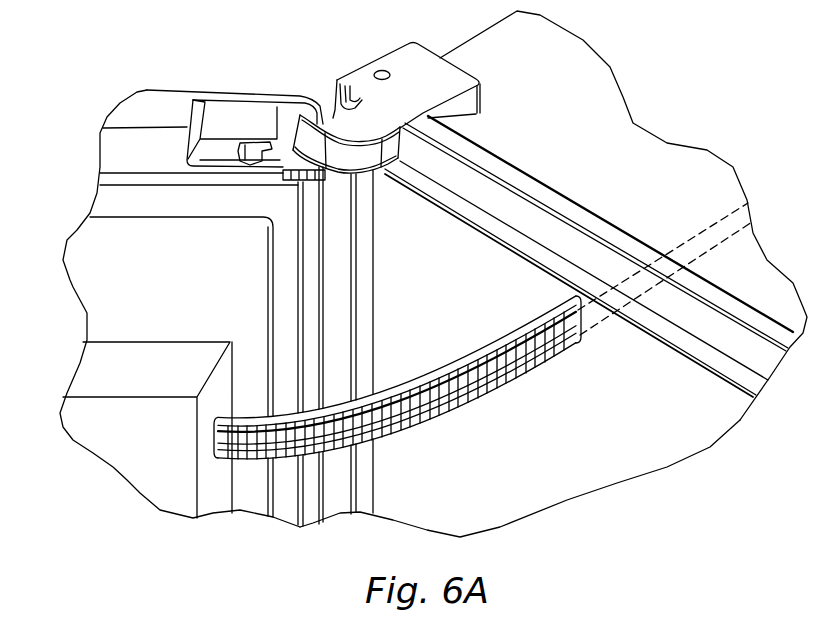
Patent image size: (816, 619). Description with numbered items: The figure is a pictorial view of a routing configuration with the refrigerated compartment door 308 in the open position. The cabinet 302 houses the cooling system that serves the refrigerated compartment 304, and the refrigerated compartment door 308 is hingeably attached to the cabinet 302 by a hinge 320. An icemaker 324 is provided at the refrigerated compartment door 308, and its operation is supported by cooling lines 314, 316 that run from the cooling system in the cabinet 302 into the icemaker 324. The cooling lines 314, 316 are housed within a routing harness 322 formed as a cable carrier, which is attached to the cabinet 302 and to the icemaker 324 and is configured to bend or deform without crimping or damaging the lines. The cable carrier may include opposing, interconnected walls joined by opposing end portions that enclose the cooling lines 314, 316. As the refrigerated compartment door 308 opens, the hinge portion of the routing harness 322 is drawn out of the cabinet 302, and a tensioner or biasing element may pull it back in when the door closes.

The cabinet 302 is at (603, 120).
The refrigerated compartment 304 is at (670, 430).
The refrigerated compartment door 308 is at (103, 287).
The cooling line 314 is at (518, 358).
The cooling line 316 is at (495, 350).
The hinge 320 is at (400, 68).
The routing harness 322 is at (460, 402).
The icemaker 324 is at (147, 463).